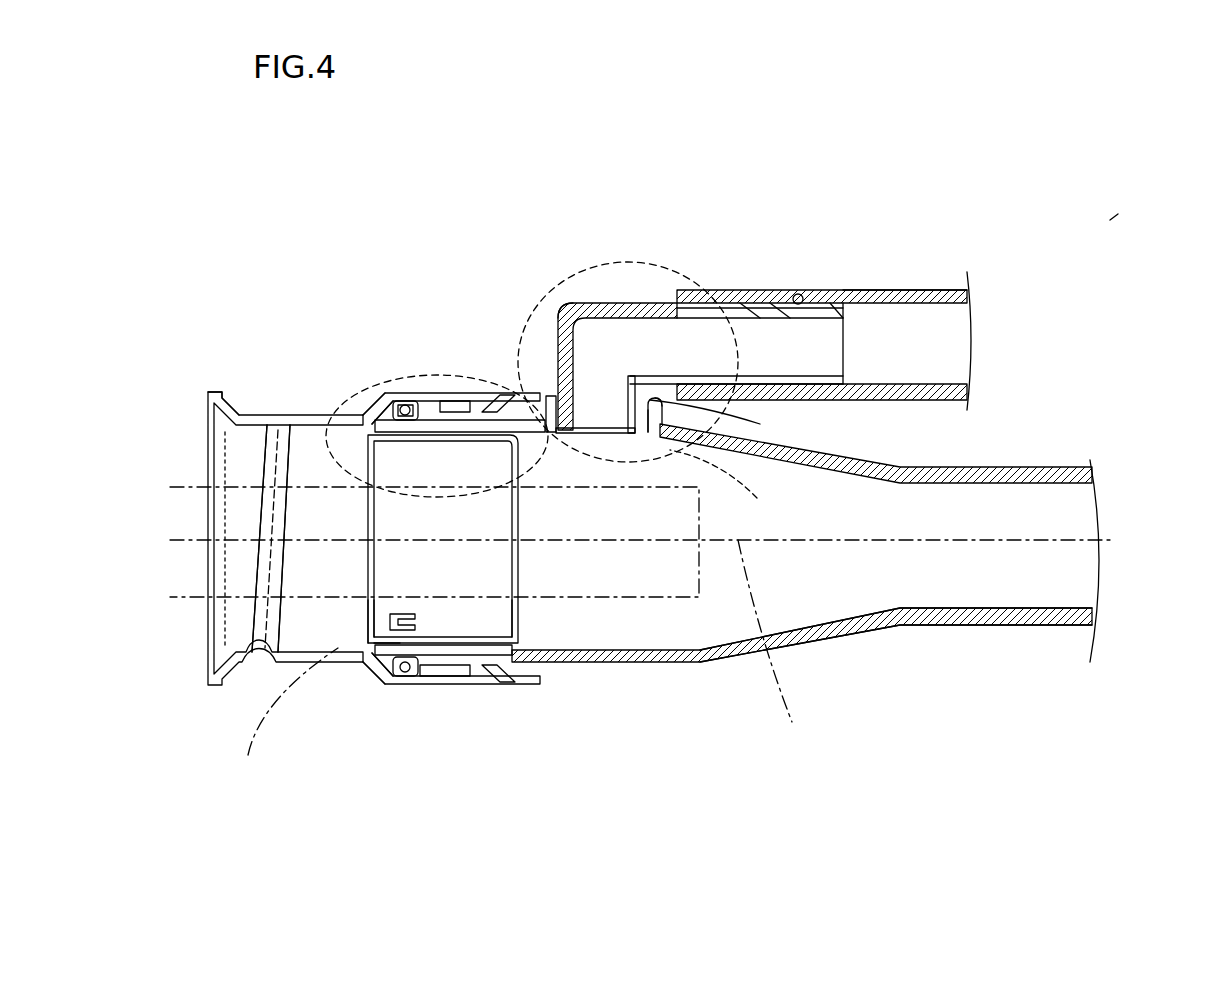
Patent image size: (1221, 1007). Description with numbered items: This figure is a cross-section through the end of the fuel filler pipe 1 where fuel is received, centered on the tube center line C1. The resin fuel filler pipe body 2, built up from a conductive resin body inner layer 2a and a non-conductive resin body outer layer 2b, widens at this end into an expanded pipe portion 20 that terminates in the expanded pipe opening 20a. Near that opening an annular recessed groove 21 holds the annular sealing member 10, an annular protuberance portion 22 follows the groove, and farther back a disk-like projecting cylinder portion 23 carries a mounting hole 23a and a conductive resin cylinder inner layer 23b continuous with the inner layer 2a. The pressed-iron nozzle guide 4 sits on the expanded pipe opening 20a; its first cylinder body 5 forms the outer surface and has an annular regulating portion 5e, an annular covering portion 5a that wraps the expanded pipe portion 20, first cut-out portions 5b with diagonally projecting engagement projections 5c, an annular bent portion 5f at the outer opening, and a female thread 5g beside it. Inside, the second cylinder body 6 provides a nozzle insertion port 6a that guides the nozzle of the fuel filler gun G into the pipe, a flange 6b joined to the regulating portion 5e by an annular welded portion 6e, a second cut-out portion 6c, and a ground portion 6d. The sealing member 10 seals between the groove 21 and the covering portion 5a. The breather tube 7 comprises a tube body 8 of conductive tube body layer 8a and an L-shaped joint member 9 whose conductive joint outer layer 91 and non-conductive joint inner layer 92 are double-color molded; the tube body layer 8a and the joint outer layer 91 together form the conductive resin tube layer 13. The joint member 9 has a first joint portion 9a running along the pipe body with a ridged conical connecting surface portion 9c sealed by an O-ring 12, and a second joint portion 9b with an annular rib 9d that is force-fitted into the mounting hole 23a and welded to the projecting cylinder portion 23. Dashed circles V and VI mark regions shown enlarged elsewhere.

The fuel filler pipe 1 is at (1118, 216).
The fuel filler pipe body 2 is at (879, 599).
The resin body inner layer 2a is at (935, 487).
The resin body outer layer 2b is at (975, 470).
The nozzle guide 4 is at (245, 362).
The first cylinder body 5 is at (243, 534).
The annular covering portion 5a is at (415, 665).
The first cut-out portion 5b is at (470, 395).
The projection 5c is at (515, 395).
The annular regulating portion 5e is at (365, 662).
The annular bent portion 5f is at (212, 385).
The female thread 5g is at (270, 445).
The second cylinder body 6 is at (374, 639).
The nozzle insertion port 6a is at (528, 630).
The flange 6b is at (345, 655).
The second cut-out portion 6c is at (420, 620).
The ground portion 6d is at (400, 612).
The annular welded portion 6e is at (382, 665).
The breather tube 7 is at (780, 269).
The tube body 8 is at (845, 267).
The tube body layer 8a is at (920, 295).
The joint member 9 is at (707, 286).
The first joint portion 9a is at (835, 300).
The second joint portion 9b is at (568, 300).
The conical connecting surface portion 9c is at (760, 300).
The annular rib 9d is at (540, 392).
The sealing member 10 is at (400, 395).
The O-ring 12 is at (830, 298).
The conductive resin tube layer 13 is at (869, 221).
The expanded pipe portion 20 is at (667, 518).
The expanded pipe opening 20a is at (378, 410).
The annular recessed groove 21 is at (405, 398).
The annular protuberance portion 22 is at (450, 395).
The projecting cylinder portion 23 is at (724, 495).
The mounting hole 23a is at (630, 420).
The resin cylinder inner layer 23b is at (645, 432).
The joint outer layer 91 is at (735, 298).
The joint inner layer 92 is at (760, 375).
The detail region V is at (375, 385).
The detail region VI is at (640, 429).
The tube center line C1 is at (777, 654).
The fuel filler gun G is at (274, 725).